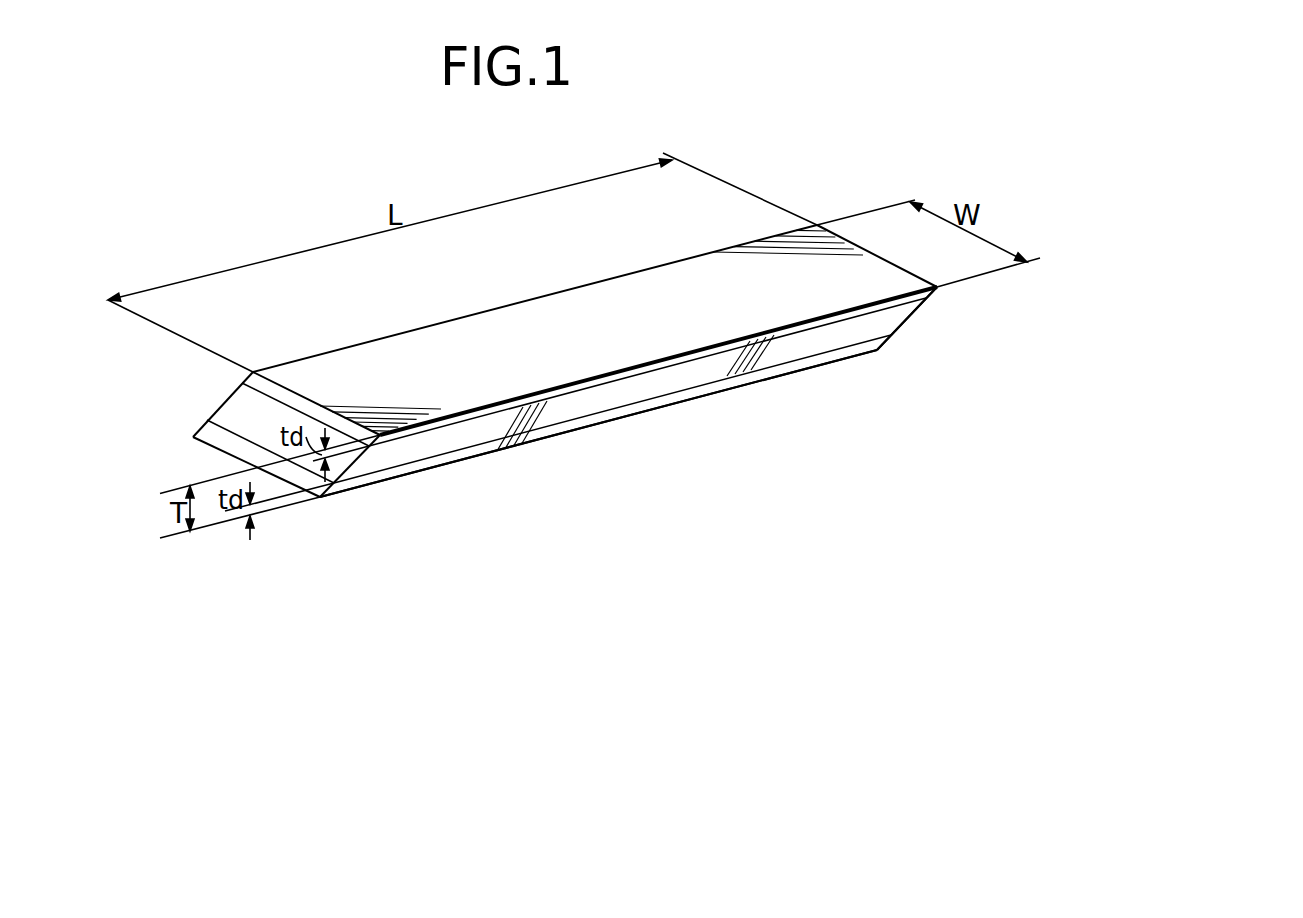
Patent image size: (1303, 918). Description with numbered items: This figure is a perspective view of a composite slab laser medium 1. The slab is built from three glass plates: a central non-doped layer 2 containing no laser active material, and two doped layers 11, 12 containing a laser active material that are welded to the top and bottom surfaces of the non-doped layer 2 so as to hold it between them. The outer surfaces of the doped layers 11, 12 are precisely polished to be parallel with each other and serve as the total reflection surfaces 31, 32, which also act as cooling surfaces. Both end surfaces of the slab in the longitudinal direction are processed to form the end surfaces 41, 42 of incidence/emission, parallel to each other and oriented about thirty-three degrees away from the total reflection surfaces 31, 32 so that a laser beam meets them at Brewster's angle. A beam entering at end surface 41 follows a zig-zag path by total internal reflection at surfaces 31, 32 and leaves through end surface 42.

The composite slab laser medium 1 is at (778, 608).
The non-doped layer 2 is at (642, 388).
The doped layer 11 is at (778, 340).
The doped layer 12 is at (880, 347).
The total reflection surface 31 is at (609, 269).
The total reflection surface 32 is at (455, 474).
The end surface of incidence/emission 41 is at (232, 431).
The end surface of incidence/emission 42 is at (918, 318).